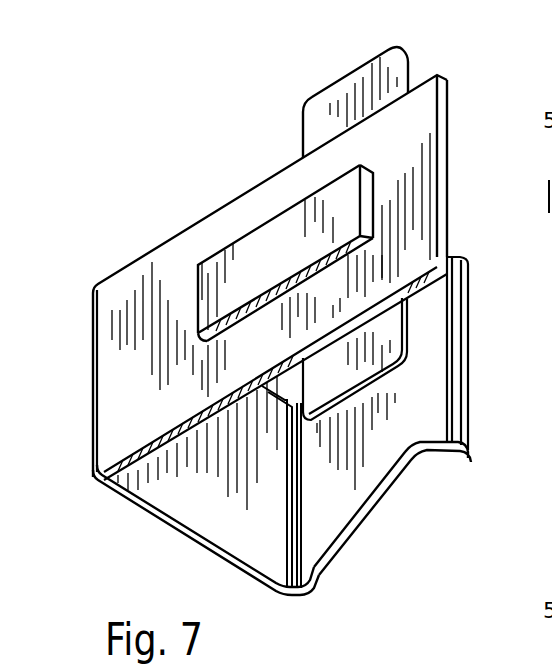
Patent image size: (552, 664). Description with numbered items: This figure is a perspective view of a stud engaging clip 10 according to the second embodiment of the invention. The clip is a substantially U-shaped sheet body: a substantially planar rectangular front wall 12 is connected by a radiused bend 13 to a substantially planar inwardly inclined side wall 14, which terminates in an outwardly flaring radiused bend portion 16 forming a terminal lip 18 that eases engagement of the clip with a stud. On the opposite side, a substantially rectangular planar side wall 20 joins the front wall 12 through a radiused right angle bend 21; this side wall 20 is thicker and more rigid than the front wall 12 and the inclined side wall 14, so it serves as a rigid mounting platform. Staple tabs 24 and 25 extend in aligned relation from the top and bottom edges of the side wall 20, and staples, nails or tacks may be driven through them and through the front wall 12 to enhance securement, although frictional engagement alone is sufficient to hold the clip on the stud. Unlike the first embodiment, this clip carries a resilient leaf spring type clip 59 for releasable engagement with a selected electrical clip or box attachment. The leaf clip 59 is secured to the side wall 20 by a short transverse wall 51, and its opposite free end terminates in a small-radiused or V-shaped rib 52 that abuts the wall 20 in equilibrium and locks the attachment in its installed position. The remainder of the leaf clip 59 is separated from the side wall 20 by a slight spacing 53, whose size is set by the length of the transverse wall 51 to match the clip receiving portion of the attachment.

The stud engaging clip 10 is at (233, 93).
The front wall 12 is at (190, 540).
The radiused bend 13 is at (300, 574).
The inclined side wall 14 is at (377, 495).
The radiused bend portion 16 is at (458, 363).
The terminal lip 18 is at (468, 387).
The side wall 20 is at (208, 233).
The radiused right angle bend 21 is at (92, 457).
The staple tab 24 is at (350, 88).
The staple tab 25 is at (392, 350).
The transverse wall 51 is at (368, 198).
The rib 52 is at (198, 332).
The spacing 53 is at (240, 328).
The resilient leaf spring type clip 59 is at (270, 246).